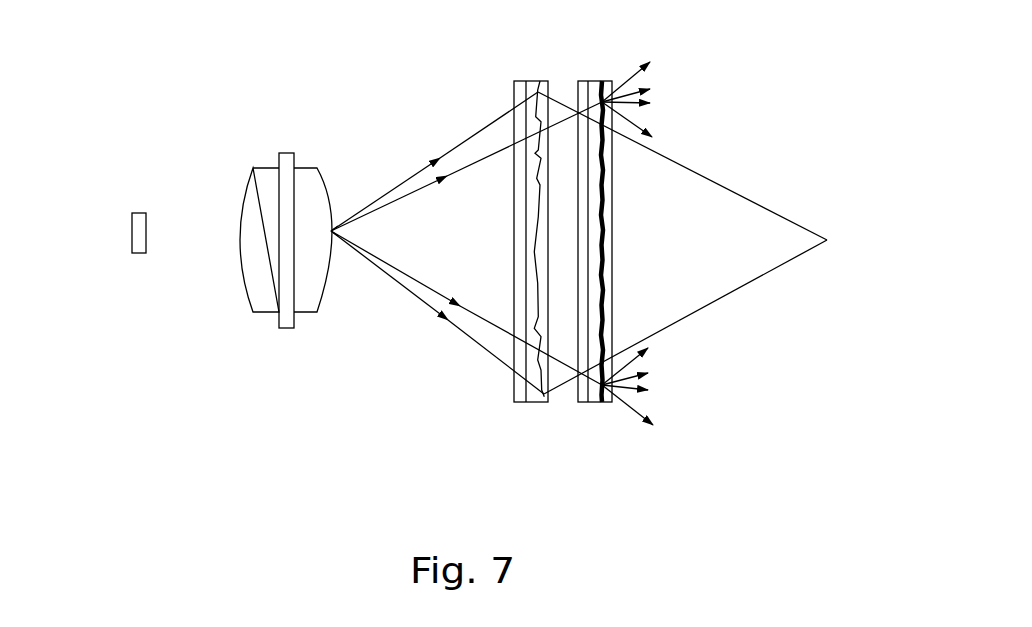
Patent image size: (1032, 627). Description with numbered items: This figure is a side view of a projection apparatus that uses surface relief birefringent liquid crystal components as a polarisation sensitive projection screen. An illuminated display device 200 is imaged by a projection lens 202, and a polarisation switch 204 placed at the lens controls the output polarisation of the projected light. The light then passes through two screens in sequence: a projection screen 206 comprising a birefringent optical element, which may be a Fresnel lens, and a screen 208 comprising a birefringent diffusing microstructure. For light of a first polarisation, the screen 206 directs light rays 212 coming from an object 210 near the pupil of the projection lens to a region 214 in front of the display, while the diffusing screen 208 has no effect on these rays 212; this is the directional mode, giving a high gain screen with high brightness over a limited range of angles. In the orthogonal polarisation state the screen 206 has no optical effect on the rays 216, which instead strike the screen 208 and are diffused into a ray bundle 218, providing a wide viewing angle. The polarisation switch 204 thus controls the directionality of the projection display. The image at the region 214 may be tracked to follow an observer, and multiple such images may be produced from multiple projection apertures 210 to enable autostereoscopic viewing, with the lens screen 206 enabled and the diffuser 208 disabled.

The illuminated display device 200 is at (132, 230).
The projection lens 202 is at (265, 303).
The polarisation switch 204 is at (288, 325).
The projection screen 206 is at (535, 397).
The screen 208 is at (597, 395).
The object 210 is at (332, 227).
The light rays 212 is at (405, 290).
The region 214 is at (827, 242).
The rays 216 is at (487, 150).
The ray bundle 218 is at (654, 243).